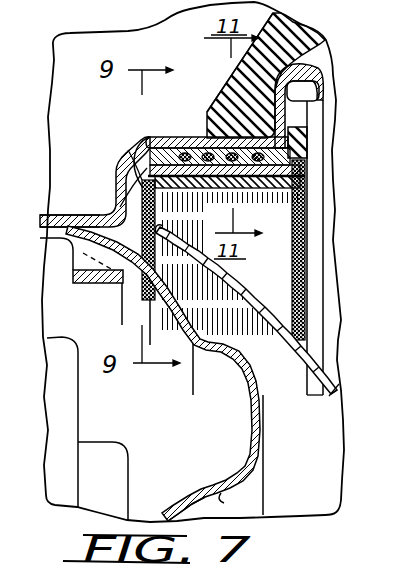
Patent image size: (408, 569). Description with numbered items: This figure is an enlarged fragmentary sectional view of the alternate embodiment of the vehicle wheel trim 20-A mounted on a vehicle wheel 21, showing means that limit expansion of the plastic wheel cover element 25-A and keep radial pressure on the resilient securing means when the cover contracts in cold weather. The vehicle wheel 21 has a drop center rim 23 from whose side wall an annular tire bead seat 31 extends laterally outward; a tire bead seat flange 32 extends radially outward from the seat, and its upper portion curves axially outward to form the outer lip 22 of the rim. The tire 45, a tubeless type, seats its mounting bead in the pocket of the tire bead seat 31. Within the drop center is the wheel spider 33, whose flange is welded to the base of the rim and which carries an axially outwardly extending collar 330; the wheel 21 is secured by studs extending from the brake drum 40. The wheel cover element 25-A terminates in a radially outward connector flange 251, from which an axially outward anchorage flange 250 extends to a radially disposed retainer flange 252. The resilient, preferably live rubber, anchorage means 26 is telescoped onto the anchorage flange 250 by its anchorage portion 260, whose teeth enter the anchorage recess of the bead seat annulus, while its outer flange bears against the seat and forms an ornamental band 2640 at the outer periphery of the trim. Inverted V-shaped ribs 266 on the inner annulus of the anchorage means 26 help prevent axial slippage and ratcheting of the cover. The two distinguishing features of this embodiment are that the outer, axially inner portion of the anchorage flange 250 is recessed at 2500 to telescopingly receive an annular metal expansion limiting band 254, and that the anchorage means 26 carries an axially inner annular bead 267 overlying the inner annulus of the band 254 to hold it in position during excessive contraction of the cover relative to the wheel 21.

The tire 45 is at (304, 46).
The tire bead seat 31 is at (207, 110).
The outer lip 22 is at (314, 72).
The tire bead seat flange 32 is at (296, 100).
The ornamental band 2640 is at (336, 102).
The vehicle wheel trim 20-A is at (351, 332).
The inverted V-shaped ribs 266 is at (306, 148).
The expansion limiting band 254 is at (152, 136).
The anchorage flange 250 is at (275, 185).
The retainer flange 252 is at (290, 168).
The anchorage portion 260 is at (270, 205).
The recess 2500 is at (143, 172).
The connector flange 251 is at (118, 220).
The drop center rim 23 is at (62, 222).
The resilient anchorage means 26 is at (140, 153).
The annular bead 267 is at (147, 185).
The wheel cover element 25-A is at (270, 308).
The brake drum 40 is at (105, 472).
The wheel spider 33 is at (254, 477).
The collar 330 is at (262, 417).
The vehicle wheel 21 is at (224, 503).